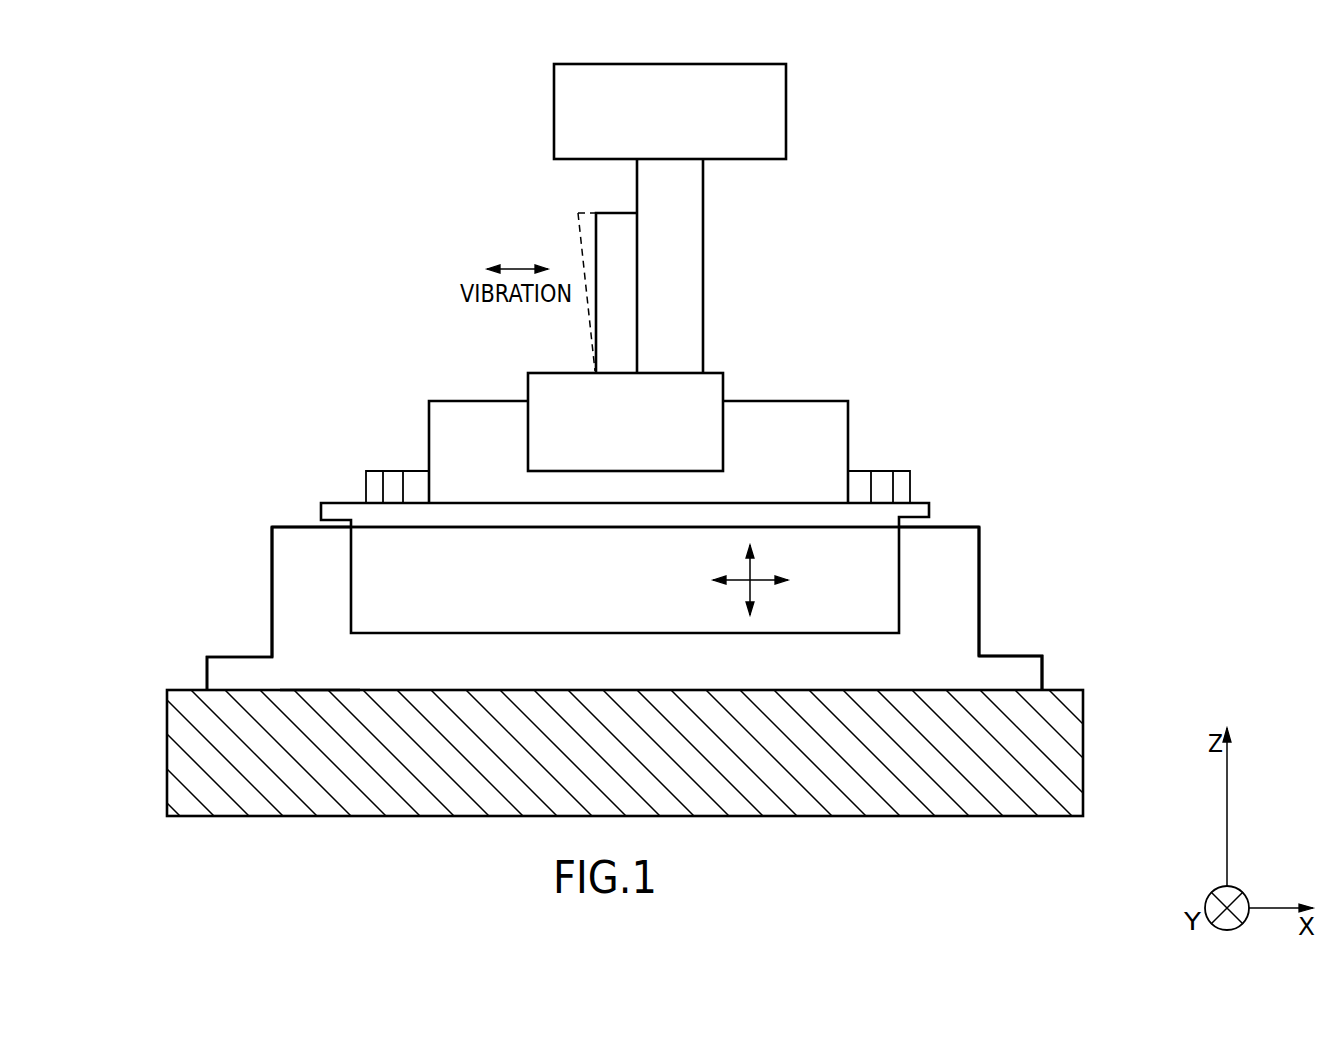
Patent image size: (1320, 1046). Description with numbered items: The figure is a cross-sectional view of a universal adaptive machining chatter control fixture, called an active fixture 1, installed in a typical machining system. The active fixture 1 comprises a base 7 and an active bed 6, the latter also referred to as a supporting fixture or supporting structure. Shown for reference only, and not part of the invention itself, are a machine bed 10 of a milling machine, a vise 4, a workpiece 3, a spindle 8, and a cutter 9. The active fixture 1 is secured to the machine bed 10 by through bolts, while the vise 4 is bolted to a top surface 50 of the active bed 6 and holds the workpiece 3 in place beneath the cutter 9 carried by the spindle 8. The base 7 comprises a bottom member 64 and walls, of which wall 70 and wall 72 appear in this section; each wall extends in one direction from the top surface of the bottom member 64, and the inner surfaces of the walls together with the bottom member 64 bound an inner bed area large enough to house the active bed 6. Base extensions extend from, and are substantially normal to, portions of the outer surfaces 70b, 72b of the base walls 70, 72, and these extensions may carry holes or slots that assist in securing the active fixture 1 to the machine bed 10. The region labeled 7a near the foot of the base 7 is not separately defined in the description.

The active fixture 1 is at (197, 510).
The workpiece 3 is at (541, 371).
The vise 4 is at (435, 401).
The active bed 6 is at (872, 563).
The base 7 is at (649, 596).
The base bottom step 7a is at (1042, 660).
The spindle 8 is at (786, 93).
The cutter 9 is at (703, 217).
The machine bed 10 is at (1083, 700).
The top surface 50 is at (337, 511).
The bottom member 64 is at (318, 690).
The wall 70 is at (290, 550).
The outer surface 70b is at (272, 593).
The wall 72 is at (960, 540).
The outer surface 72b is at (979, 563).